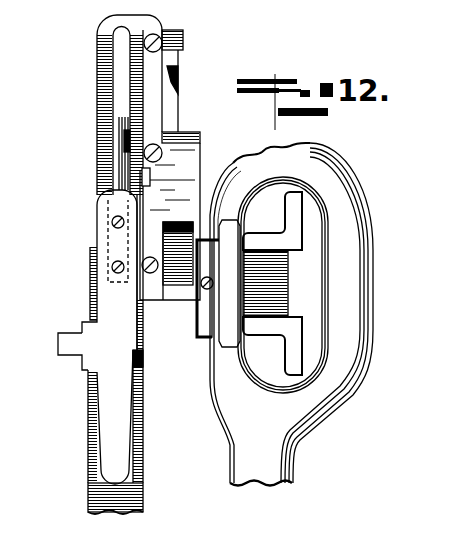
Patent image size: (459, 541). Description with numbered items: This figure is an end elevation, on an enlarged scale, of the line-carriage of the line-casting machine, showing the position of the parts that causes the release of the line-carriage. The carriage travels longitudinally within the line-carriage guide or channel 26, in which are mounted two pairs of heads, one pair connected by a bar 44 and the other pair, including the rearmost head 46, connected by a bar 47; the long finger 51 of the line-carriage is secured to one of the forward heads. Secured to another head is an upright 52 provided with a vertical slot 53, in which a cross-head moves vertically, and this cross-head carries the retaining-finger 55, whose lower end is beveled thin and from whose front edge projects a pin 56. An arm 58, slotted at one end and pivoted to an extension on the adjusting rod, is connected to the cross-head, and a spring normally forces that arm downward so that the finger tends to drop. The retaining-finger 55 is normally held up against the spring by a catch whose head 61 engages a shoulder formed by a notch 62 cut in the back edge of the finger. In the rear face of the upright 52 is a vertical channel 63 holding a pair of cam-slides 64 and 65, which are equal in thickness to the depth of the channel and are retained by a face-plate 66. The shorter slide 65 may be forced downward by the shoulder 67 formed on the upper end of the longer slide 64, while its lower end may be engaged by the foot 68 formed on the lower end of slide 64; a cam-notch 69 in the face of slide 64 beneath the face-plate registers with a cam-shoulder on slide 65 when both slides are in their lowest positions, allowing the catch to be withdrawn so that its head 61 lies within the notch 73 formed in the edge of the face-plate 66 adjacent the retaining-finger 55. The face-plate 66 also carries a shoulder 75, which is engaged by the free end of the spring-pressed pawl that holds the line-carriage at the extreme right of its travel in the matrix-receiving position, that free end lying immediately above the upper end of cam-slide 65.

The line-carriage guide or channel 26 is at (213, 205).
The bar 44 is at (297, 212).
The head 46 is at (228, 277).
The bar 47 is at (293, 348).
The long finger 51 is at (163, 470).
The upright 52 is at (100, 93).
The vertical slot 53 is at (120, 50).
The retaining-finger 55 is at (110, 310).
The pin 56 is at (67, 347).
The arm 58 is at (125, 163).
The head 61 is at (146, 178).
The notch 62 is at (143, 353).
The vertical channel 63 is at (180, 273).
The cam-slide 64 is at (185, 35).
The cam-slide 65 is at (188, 130).
The face-plate 66 is at (200, 155).
The shoulder 67 is at (186, 47).
The foot 68 is at (157, 242).
The cam-notch 69 is at (173, 70).
The notch 73 is at (150, 175).
The shoulder 75 is at (200, 140).